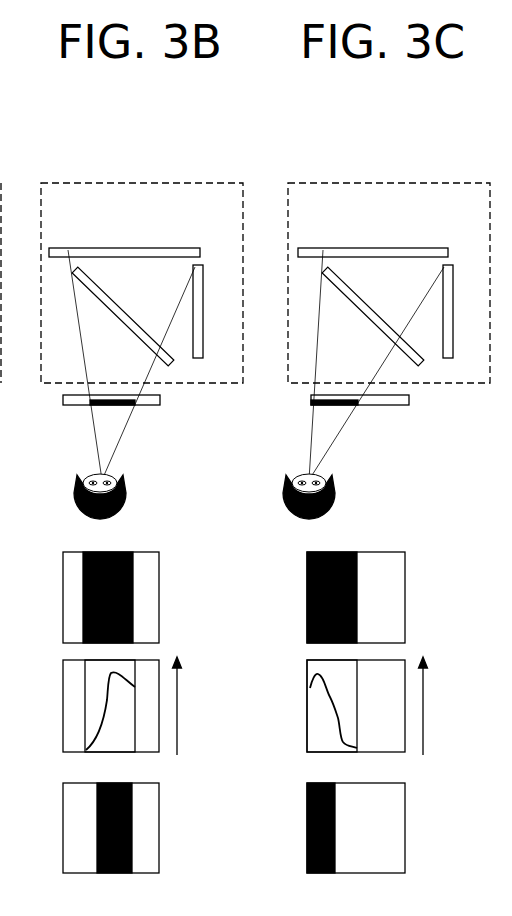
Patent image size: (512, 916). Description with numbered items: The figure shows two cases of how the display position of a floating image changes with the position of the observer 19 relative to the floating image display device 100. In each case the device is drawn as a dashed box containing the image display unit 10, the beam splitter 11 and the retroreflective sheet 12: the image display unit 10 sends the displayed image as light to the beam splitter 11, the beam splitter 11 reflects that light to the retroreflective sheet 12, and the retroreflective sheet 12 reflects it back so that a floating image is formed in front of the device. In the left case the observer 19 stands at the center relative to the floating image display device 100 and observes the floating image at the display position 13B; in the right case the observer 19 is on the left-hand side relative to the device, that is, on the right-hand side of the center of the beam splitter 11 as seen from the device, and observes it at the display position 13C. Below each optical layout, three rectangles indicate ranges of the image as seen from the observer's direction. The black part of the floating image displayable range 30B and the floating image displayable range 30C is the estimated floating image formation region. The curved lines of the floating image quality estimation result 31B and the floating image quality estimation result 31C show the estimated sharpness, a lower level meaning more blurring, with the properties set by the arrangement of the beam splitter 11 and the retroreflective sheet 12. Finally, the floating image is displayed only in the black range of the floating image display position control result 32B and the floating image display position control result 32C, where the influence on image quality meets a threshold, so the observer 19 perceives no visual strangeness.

In FIG. 3B, the floating image display device 100 is at (197, 185).
In FIG. 3C, the floating image display device 100 is at (429, 185).
In FIG. 3B, the image display unit 10 is at (200, 265).
In FIG. 3C, the image display unit 10 is at (451, 265).
In FIG. 3B, the beam splitter 11 is at (120, 322).
In FIG. 3C, the beam splitter 11 is at (366, 322).
In FIG. 3B, the retroreflective sheet 12 is at (128, 247).
In FIG. 3C, the retroreflective sheet 12 is at (374, 247).
In FIG. 3B, the display position 13B is at (140, 404).
In FIG. 3C, the display position 13C is at (356, 404).
In FIG. 3B, the observer 19 is at (82, 515).
In FIG. 3C, the observer 19 is at (289, 515).
In FIG. 3B, the floating image displayable range 30B is at (62, 600).
In FIG. 3C, the floating image displayable range 30C is at (307, 597).
In FIG. 3B, the floating image quality estimation result 31B is at (62, 702).
In FIG. 3C, the floating image quality estimation result 31C is at (307, 700).
In FIG. 3B, the floating image display position control result 32B is at (62, 822).
In FIG. 3C, the floating image display position control result 32C is at (307, 817).